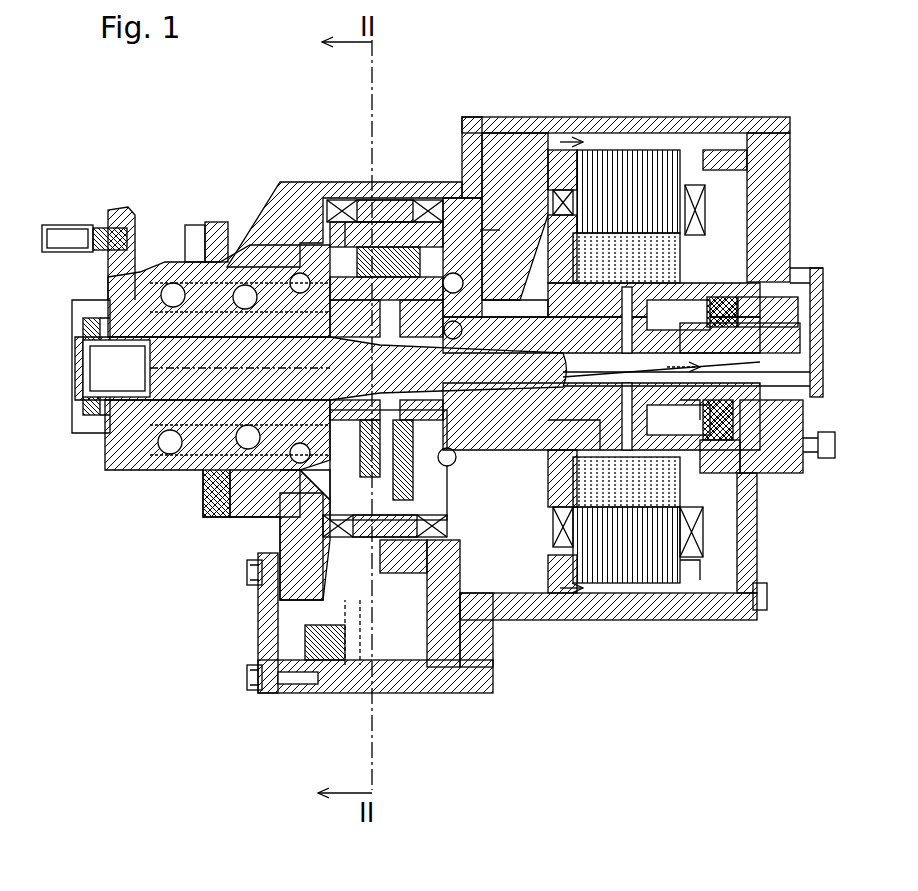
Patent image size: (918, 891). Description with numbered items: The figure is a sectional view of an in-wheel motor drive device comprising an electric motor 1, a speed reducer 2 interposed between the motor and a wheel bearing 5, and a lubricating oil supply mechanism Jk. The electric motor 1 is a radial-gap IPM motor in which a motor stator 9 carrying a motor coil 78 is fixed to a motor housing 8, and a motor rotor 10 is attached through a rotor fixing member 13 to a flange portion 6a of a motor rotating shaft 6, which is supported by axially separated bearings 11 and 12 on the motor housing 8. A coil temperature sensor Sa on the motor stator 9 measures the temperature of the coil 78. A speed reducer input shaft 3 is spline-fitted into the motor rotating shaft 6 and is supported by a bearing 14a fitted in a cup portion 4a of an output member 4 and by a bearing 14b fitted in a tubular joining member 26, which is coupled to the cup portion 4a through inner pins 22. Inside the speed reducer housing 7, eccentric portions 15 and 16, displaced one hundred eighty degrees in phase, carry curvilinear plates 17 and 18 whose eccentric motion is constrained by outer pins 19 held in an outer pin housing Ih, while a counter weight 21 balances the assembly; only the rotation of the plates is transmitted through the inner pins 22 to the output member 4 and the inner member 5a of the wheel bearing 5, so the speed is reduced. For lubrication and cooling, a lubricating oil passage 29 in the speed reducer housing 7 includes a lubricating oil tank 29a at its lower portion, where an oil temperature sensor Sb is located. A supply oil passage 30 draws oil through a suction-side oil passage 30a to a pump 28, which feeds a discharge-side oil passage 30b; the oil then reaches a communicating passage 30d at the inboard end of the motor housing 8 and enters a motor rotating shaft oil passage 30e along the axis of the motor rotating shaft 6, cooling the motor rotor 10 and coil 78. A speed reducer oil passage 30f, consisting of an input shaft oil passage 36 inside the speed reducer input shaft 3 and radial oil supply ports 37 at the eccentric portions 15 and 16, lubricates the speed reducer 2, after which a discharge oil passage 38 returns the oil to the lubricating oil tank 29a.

The electric motor 1 is at (633, 633).
The speed reducer 2 is at (266, 196).
The speed reducer input shaft 3 is at (203, 443).
The output member 4 is at (110, 392).
The cup portion 4a is at (262, 470).
The wheel bearing 5 is at (105, 205).
The inner member 5a is at (78, 308).
The motor rotating shaft 6 is at (838, 446).
The flange portion 6a is at (693, 407).
The speed reducer housing 7 is at (352, 200).
The motor housing 8 is at (660, 125).
The motor stator 9 is at (672, 150).
The motor rotor 10 is at (660, 257).
The bearing 11 is at (763, 317).
The bearing 12 is at (548, 450).
The rotor fixing member 13 is at (690, 493).
The bearing 14a is at (198, 258).
The bearing 14b is at (455, 480).
The eccentric portion 15 is at (235, 292).
The eccentric portion 16 is at (412, 560).
The curvilinear plate 17 is at (262, 576).
The curvilinear plate 18 is at (388, 245).
The outer pins 19 is at (310, 600).
The counter weight 21 is at (208, 485).
The inner pins 22 is at (330, 268).
The tubular joining member 26 is at (475, 520).
The pump 28 is at (510, 280).
The lubricating oil passage 29 is at (362, 665).
The lubricating oil tank 29a is at (355, 665).
The supply oil passage 30 is at (563, 137).
The suction-side oil passage 30a is at (598, 140).
The discharge-side oil passage 30b is at (470, 240).
The communicating passage 30d is at (812, 314).
The motor rotating shaft oil passage 30e is at (760, 362).
The speed reducer oil passage 30f is at (250, 378).
The input shaft oil passage 36 is at (723, 355).
The oil supply ports 37 is at (158, 323).
The discharge oil passage 38 is at (367, 665).
The motor coil 78 is at (703, 207).
The outer pin housing Ih is at (360, 240).
The lubricating oil supply mechanism Jk is at (480, 230).
The coil temperature sensor Sa is at (687, 567).
The oil temperature sensor Sb is at (305, 645).